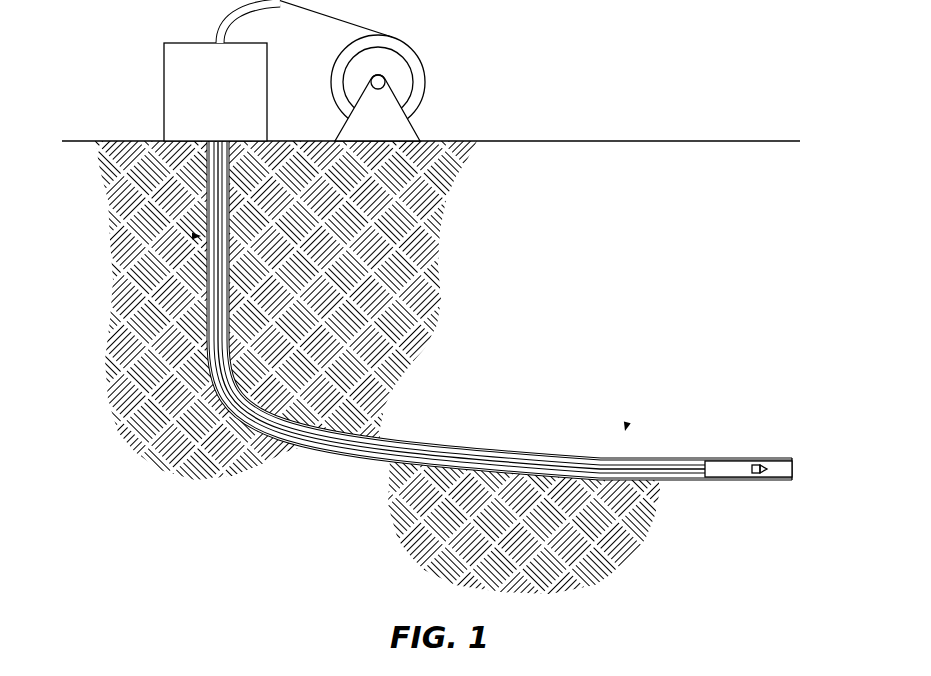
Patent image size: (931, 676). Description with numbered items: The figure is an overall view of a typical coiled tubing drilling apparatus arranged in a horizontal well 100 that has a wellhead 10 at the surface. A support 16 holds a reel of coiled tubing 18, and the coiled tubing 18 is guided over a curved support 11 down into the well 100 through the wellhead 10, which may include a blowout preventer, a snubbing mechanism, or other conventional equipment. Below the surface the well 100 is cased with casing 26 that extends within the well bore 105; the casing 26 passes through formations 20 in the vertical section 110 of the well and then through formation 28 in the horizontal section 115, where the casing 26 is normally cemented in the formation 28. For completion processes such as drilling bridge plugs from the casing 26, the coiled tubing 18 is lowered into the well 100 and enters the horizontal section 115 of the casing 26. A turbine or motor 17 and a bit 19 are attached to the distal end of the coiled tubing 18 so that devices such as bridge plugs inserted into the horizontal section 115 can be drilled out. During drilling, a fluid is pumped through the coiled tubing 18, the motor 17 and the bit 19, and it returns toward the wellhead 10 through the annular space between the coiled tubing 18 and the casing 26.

The horizontal well 100 is at (140, 113).
The wellhead 10 is at (181, 43).
The curved support 11 is at (241, 19).
The coiled tubing 18 is at (407, 55).
The support 16 is at (403, 128).
The casing 26 is at (226, 212).
The formations 20 is at (388, 301).
The formation 28 is at (527, 552).
The well bore 105 is at (229, 340).
The vertical section 110 is at (192, 236).
The horizontal section 115 is at (627, 424).
The turbine or motor 17 is at (737, 462).
The bit 19 is at (757, 478).